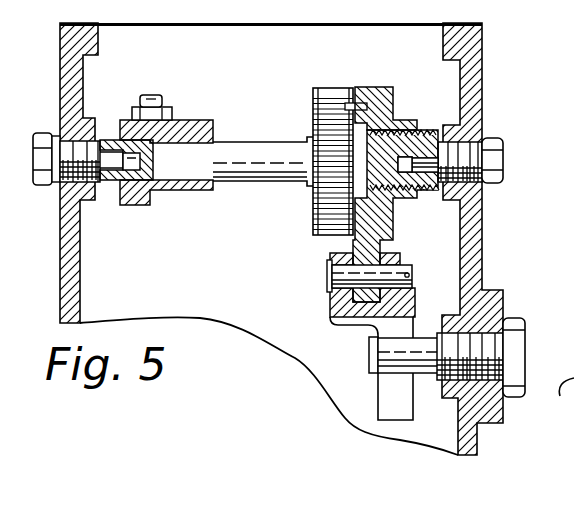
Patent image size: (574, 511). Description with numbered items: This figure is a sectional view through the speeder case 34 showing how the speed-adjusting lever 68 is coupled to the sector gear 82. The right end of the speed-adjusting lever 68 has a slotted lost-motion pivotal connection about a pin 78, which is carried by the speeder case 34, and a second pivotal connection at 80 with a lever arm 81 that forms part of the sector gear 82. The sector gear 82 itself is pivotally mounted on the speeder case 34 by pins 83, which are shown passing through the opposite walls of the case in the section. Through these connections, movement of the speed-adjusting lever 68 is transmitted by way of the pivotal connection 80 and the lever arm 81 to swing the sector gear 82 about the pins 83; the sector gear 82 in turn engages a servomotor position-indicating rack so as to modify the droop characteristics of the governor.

The speeder case 34 is at (67, 243).
The pins 83 is at (44, 133).
The sector gear 82 is at (327, 93).
The lever arm 81 is at (357, 240).
The second pivotal connection 80 is at (410, 277).
The speed-adjusting lever 68 is at (335, 300).
The pin 78 is at (373, 350).